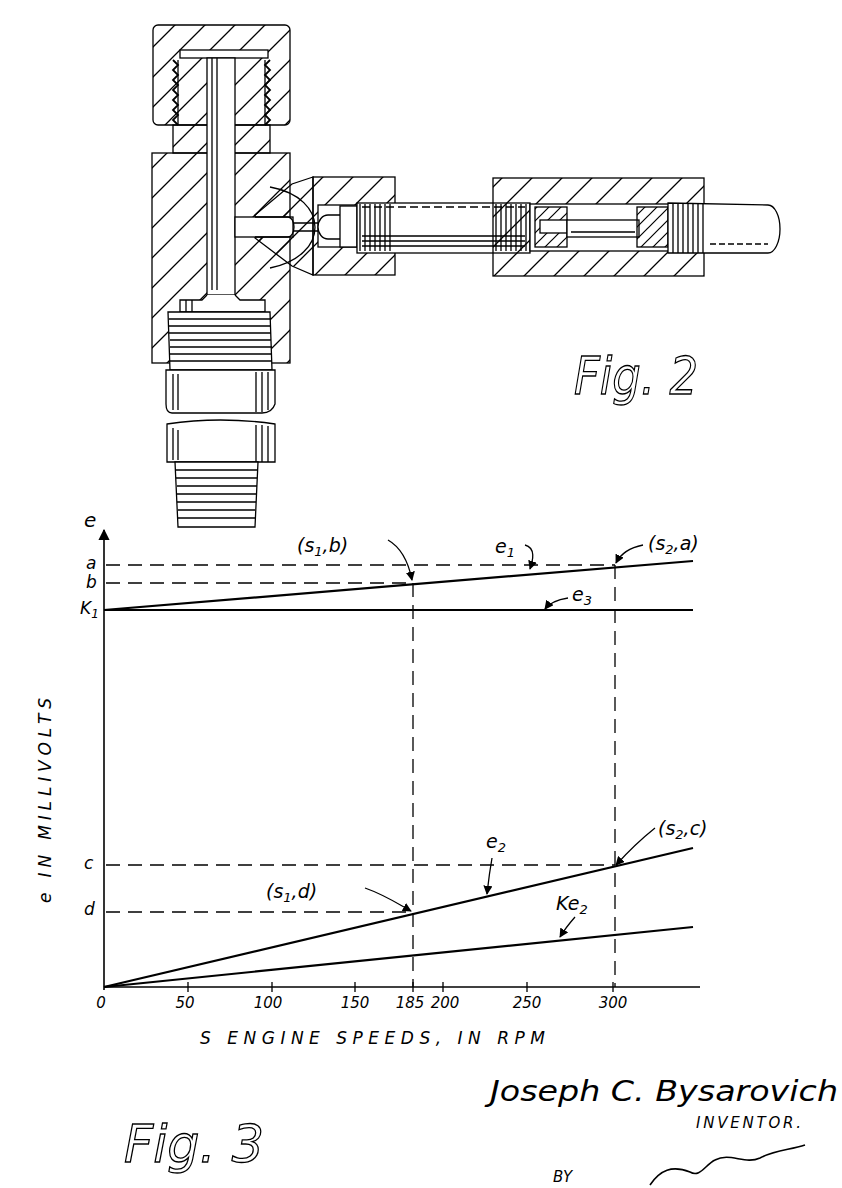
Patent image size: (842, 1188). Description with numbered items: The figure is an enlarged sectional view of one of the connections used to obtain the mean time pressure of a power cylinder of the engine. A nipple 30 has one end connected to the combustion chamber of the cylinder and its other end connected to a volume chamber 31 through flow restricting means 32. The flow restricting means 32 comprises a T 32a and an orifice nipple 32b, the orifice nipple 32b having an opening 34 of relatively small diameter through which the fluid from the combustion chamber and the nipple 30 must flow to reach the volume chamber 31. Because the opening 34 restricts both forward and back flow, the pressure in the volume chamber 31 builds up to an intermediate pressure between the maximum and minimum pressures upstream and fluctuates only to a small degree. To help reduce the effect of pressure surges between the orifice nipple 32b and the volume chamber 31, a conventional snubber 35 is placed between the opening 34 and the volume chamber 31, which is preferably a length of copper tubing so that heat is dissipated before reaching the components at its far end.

The flow restricting means 32 is at (150, 205).
The T 32a is at (290, 153).
The orifice nipple 32b is at (364, 178).
The opening 34 is at (298, 256).
The snubber 35 is at (563, 180).
The volume chamber 31 is at (757, 205).
The nipple 30 is at (276, 396).